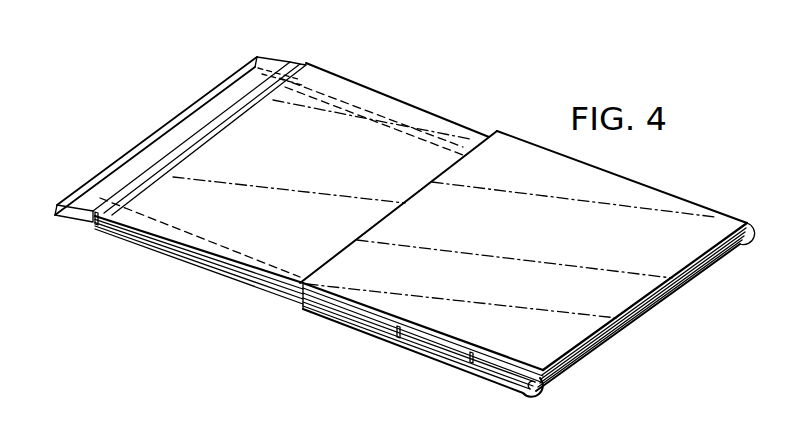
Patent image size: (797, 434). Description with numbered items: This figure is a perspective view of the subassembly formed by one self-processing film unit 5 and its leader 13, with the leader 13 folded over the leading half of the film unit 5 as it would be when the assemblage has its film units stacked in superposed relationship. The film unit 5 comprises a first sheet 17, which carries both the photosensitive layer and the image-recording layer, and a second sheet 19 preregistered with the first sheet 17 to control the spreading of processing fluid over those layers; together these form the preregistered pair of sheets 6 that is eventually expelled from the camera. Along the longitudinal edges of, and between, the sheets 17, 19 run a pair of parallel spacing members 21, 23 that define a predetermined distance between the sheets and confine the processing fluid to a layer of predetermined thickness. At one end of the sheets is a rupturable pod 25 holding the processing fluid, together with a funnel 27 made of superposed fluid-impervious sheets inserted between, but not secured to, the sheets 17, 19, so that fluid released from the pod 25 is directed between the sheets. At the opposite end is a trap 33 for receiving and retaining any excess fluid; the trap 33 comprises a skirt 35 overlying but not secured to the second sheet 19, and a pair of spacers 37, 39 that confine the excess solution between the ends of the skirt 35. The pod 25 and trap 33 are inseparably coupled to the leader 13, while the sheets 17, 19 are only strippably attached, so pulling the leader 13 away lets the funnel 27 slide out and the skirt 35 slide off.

The film unit 5 is at (398, 99).
The pair of preregistered sheets 6 is at (333, 117).
The leader 13 is at (147, 246).
The first sheet 17 is at (160, 247).
The second sheet 19 is at (283, 296).
The spacing member 21 is at (180, 256).
The spacing member 23 is at (418, 137).
The rupturable pod 25 is at (497, 372).
The funnel 27 is at (427, 352).
The trap 33 is at (175, 108).
The skirt 35 is at (140, 145).
The spacer 37 is at (72, 225).
The spacer 39 is at (283, 53).